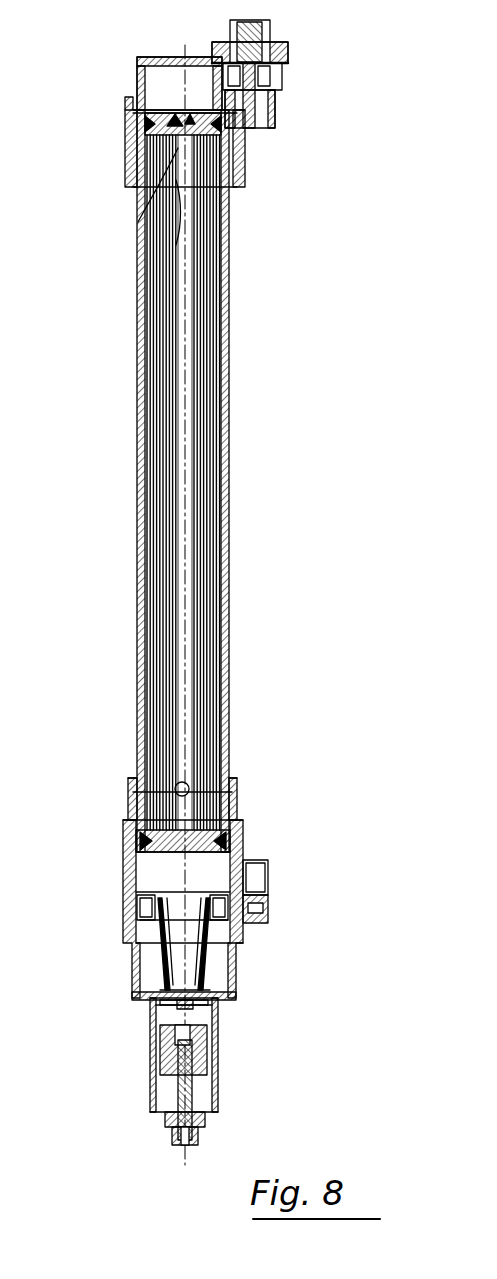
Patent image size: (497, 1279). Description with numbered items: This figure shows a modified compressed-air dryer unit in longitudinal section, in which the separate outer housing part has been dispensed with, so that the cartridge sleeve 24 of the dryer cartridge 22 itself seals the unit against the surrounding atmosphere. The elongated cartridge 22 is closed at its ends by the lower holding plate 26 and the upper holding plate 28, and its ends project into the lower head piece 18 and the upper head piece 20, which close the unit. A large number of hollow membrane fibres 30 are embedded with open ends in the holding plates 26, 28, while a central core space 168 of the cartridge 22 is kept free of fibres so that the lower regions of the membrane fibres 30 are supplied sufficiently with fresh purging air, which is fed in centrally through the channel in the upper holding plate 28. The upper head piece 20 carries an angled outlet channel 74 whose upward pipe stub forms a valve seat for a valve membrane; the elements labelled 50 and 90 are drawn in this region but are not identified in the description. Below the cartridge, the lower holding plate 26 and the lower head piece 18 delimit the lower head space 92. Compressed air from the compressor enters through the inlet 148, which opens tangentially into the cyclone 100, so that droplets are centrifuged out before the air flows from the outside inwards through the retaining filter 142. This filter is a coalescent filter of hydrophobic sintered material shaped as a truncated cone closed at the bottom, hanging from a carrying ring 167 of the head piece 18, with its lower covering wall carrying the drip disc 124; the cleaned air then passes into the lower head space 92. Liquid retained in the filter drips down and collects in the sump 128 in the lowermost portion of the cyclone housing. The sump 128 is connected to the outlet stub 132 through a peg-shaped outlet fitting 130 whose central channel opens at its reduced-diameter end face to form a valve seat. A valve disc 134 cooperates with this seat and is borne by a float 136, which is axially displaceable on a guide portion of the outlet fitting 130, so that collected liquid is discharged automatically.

The lower head piece 18 is at (123, 860).
The upper head piece 20 is at (137, 80).
The dryer cartridge 22 is at (137, 425).
The cartridge sleeve 24 is at (137, 583).
The lower holding plate 26 is at (150, 830).
The upper holding plate 28 is at (137, 221).
The hollow membrane fibres 30 is at (165, 278).
The ball 50 is at (183, 770).
The angled outlet channel 74 is at (260, 110).
The top fitting 90 is at (272, 32).
The lower head space 92 is at (208, 868).
The cyclone 100 is at (130, 967).
The drip disc 124 is at (237, 960).
The sump 128 is at (222, 1045).
The outlet fitting 130 is at (165, 1088).
The outlet stub 132 is at (170, 1143).
The valve disc 134 is at (196, 1020).
The float 136 is at (222, 1062).
The retaining filter 142 is at (240, 935).
The inlet 148 is at (268, 907).
The carrying ring 167 is at (137, 905).
The central core space 168 is at (188, 633).